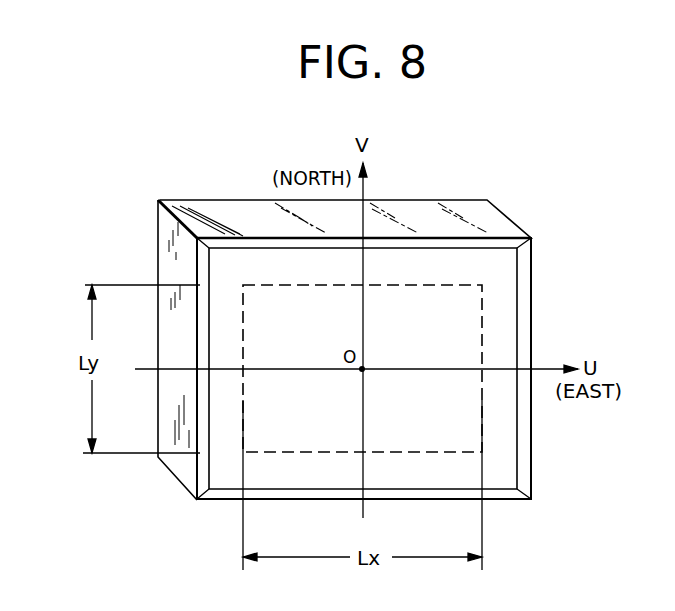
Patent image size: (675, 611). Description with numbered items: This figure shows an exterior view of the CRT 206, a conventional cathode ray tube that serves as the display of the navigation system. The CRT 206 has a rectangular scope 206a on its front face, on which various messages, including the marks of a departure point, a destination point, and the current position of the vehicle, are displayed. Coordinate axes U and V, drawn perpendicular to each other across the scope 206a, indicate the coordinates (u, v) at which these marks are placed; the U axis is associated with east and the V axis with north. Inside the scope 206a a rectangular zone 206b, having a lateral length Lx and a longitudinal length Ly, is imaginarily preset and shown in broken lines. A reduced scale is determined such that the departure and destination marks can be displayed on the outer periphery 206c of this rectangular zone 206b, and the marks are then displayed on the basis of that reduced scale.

The CRT 206 is at (148, 213).
The rectangular scope 206a is at (233, 265).
The rectangular zone 206b is at (470, 300).
The outer periphery 206c is at (483, 318).